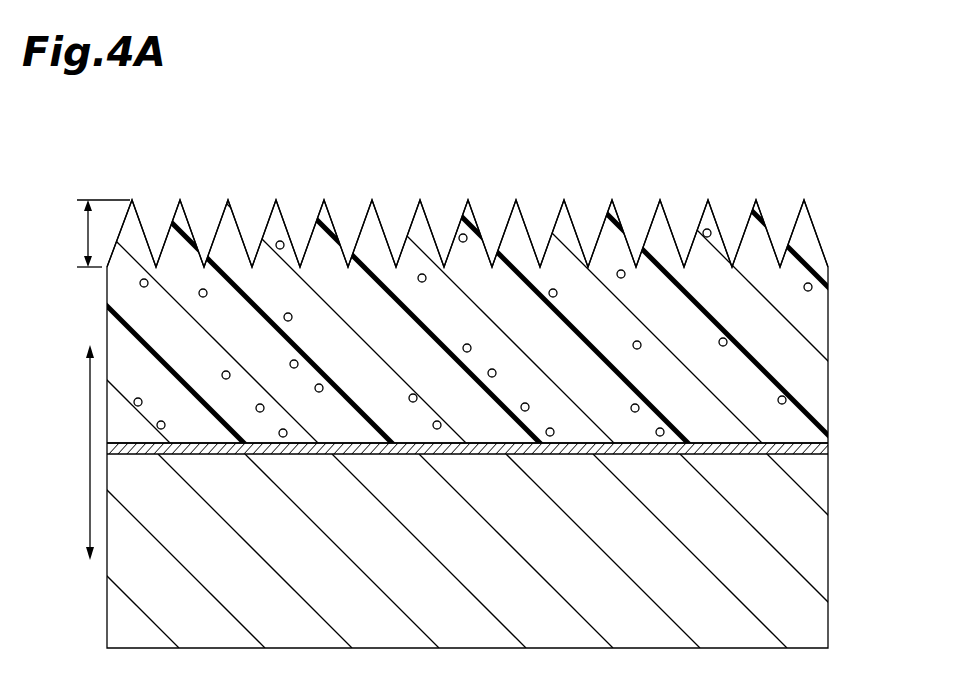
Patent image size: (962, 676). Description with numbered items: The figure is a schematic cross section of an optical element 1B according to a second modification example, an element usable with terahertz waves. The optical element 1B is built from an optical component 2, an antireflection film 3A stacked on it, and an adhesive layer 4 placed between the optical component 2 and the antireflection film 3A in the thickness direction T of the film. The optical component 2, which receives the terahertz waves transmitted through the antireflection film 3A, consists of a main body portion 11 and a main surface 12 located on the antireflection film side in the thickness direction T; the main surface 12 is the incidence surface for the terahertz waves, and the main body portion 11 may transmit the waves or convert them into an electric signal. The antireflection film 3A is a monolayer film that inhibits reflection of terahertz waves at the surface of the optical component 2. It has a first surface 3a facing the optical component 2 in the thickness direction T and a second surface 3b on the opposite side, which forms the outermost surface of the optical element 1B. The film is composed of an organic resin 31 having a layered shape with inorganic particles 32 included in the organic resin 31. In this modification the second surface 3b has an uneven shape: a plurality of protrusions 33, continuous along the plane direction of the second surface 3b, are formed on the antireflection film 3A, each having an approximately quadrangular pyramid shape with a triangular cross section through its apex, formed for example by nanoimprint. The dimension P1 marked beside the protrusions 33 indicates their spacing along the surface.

The optical element 1B is at (827, 149).
The optical component 2 is at (887, 477).
The main body portion 11 is at (813, 555).
The main surface 12 is at (745, 446).
The adhesive layer 4 is at (822, 447).
The antireflection film 3A is at (887, 210).
The organic resin 31 is at (815, 373).
The inorganic particles 32 is at (288, 313).
The protrusions 33 is at (170, 233).
The first surface 3a is at (440, 450).
The second surface 3b is at (356, 231).
The pitch of protrusions P1 is at (86, 233).
The thickness direction T is at (80, 452).